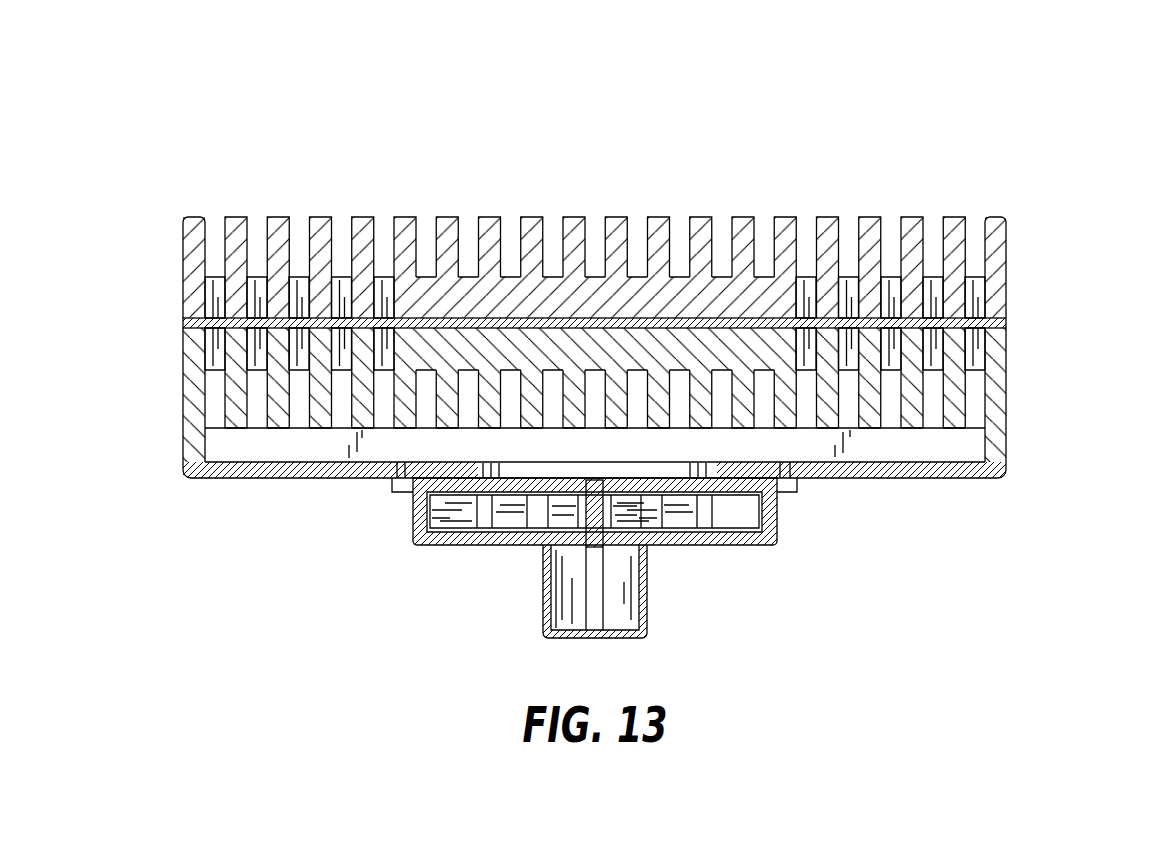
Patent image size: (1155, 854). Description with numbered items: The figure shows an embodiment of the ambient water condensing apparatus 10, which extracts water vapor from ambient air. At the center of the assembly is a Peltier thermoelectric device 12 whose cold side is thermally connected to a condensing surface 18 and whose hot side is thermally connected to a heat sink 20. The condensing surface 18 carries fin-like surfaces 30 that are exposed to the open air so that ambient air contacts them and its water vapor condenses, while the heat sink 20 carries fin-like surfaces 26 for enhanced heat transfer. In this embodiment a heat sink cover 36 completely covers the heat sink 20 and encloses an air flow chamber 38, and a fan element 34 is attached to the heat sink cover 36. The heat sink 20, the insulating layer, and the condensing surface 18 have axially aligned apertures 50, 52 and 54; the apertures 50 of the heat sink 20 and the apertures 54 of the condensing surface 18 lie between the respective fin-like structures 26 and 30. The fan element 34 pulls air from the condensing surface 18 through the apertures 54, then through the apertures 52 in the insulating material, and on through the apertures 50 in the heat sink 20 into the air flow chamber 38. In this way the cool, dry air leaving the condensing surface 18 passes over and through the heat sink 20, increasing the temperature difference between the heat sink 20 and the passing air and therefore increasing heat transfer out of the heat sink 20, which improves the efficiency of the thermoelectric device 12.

The ambient water condensing apparatus 10 is at (907, 97).
The Peltier thermoelectric device 12 is at (600, 318).
The condensing surface 18 is at (1008, 245).
The heat sink 20 is at (1008, 400).
The fin-like surfaces 26 is at (278, 427).
The fin-like surfaces 30 is at (487, 217).
The fan element 34 is at (648, 583).
The heat sink cover 36 is at (952, 470).
The air flow chamber 38 is at (872, 447).
The apertures 50 is at (212, 290).
The apertures 52 is at (225, 322).
The apertures 54 is at (212, 342).